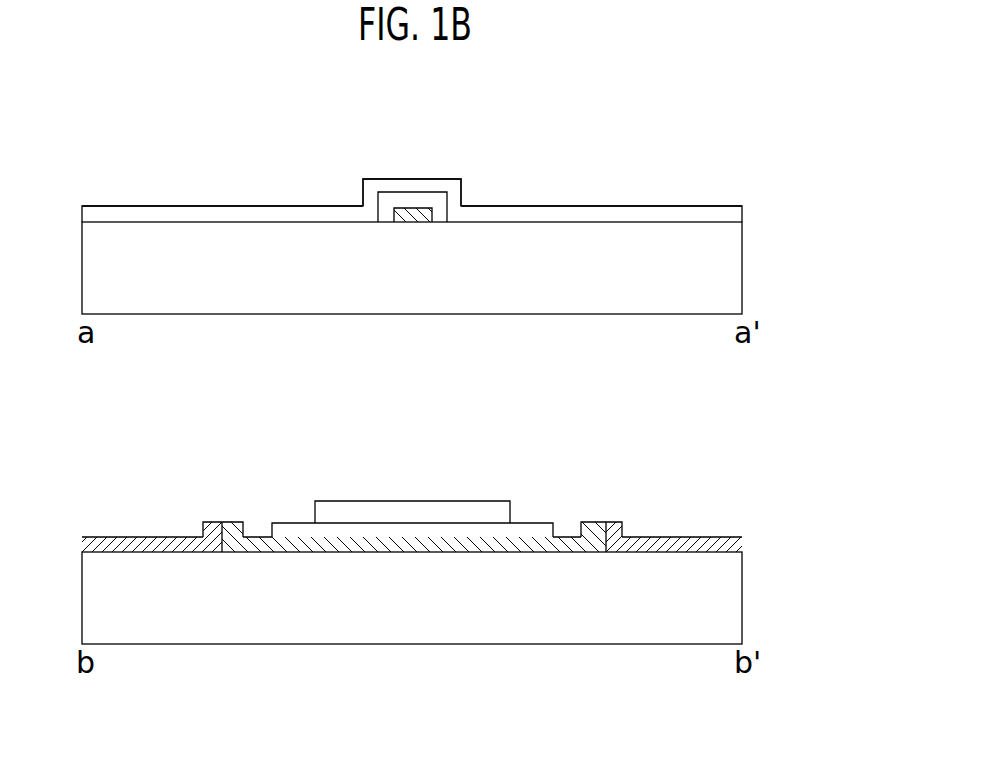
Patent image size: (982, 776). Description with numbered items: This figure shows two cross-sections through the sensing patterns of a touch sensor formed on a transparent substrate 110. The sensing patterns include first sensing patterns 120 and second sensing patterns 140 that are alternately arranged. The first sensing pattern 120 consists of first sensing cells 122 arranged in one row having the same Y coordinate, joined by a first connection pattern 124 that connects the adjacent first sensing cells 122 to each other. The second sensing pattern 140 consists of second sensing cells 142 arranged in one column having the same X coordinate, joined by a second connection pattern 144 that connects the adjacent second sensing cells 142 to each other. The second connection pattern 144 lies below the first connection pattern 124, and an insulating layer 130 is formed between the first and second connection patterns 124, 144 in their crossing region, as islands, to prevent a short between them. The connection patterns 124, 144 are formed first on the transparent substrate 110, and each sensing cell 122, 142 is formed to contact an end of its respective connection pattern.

The transparent substrate 110 is at (735, 260).
The first sensing pattern 120 is at (595, 96).
The first sensing cell 122 is at (258, 216).
The first connection pattern 124 is at (412, 180).
The insulating layer 130 is at (213, 216).
The second sensing pattern 140 is at (618, 439).
The second sensing cell 142 is at (212, 522).
The second connection pattern 144 is at (237, 216).